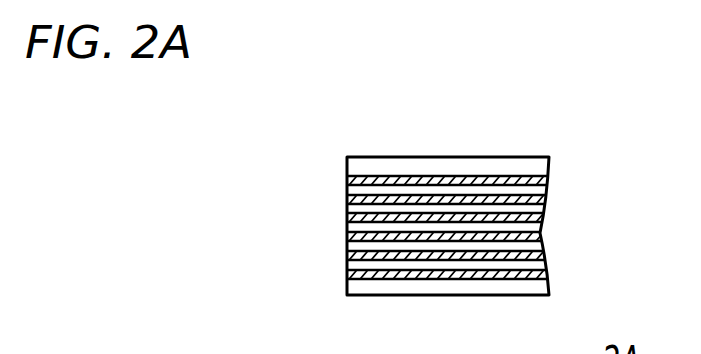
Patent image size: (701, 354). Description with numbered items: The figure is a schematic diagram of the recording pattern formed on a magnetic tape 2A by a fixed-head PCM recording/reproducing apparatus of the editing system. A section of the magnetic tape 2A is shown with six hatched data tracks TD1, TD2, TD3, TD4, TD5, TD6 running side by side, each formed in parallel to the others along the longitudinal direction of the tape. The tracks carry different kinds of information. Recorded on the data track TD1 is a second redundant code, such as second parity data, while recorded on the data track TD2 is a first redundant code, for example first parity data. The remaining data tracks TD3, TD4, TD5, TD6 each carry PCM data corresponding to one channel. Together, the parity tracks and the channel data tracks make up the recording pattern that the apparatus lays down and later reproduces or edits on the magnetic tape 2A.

The magnetic tape 2A is at (515, 157).
The data track TD1 is at (347, 180).
The data track TD2 is at (347, 199).
The data track TD3 is at (347, 218).
The data track TD4 is at (347, 236).
The data track TD5 is at (347, 257).
The data track TD6 is at (347, 275).